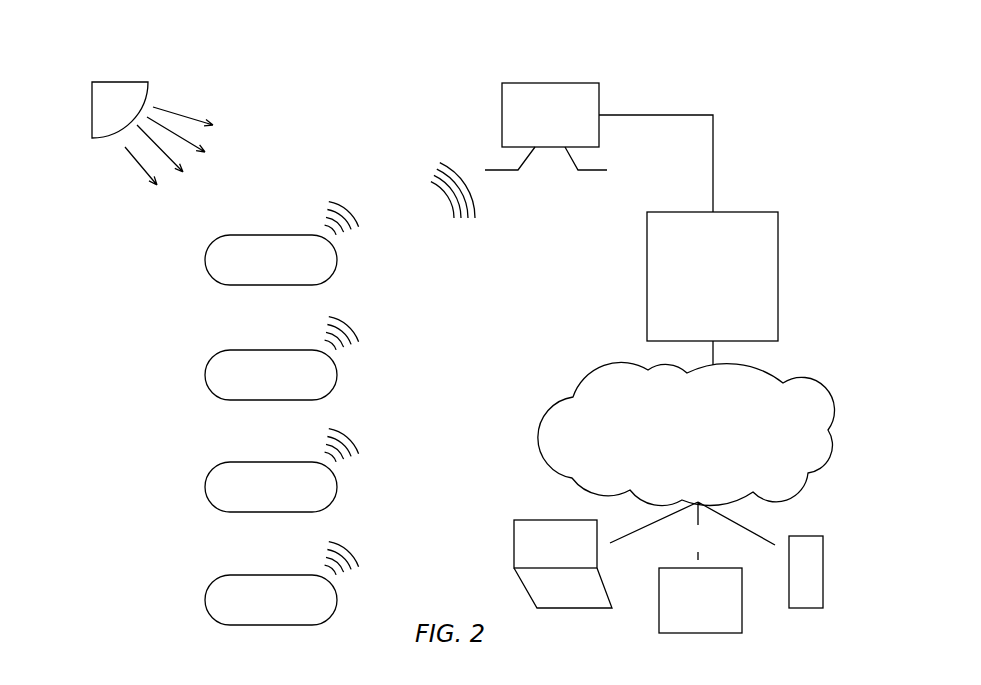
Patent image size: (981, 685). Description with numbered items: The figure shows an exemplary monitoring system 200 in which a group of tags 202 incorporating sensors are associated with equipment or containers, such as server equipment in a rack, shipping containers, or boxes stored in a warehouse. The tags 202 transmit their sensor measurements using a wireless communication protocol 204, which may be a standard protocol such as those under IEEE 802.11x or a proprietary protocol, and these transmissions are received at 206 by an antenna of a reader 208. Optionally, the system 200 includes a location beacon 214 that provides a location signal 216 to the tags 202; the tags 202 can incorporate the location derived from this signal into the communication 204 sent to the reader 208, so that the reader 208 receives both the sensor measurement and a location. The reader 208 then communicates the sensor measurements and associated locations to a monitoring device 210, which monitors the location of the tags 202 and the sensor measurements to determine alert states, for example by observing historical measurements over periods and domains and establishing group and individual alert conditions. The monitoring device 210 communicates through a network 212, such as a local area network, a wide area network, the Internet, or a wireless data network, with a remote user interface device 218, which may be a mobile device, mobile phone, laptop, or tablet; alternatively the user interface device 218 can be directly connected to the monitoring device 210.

The system 200 is at (732, 57).
The tags 202 is at (205, 260).
The wireless communication protocol 204 is at (368, 252).
The reception at reader antenna 206 is at (448, 147).
The reader 208 is at (547, 82).
The monitoring device 210 is at (647, 278).
The network 212 is at (538, 443).
The location beacon 214 is at (125, 82).
The location signal 216 is at (197, 110).
The user interface device 218 is at (668, 567).